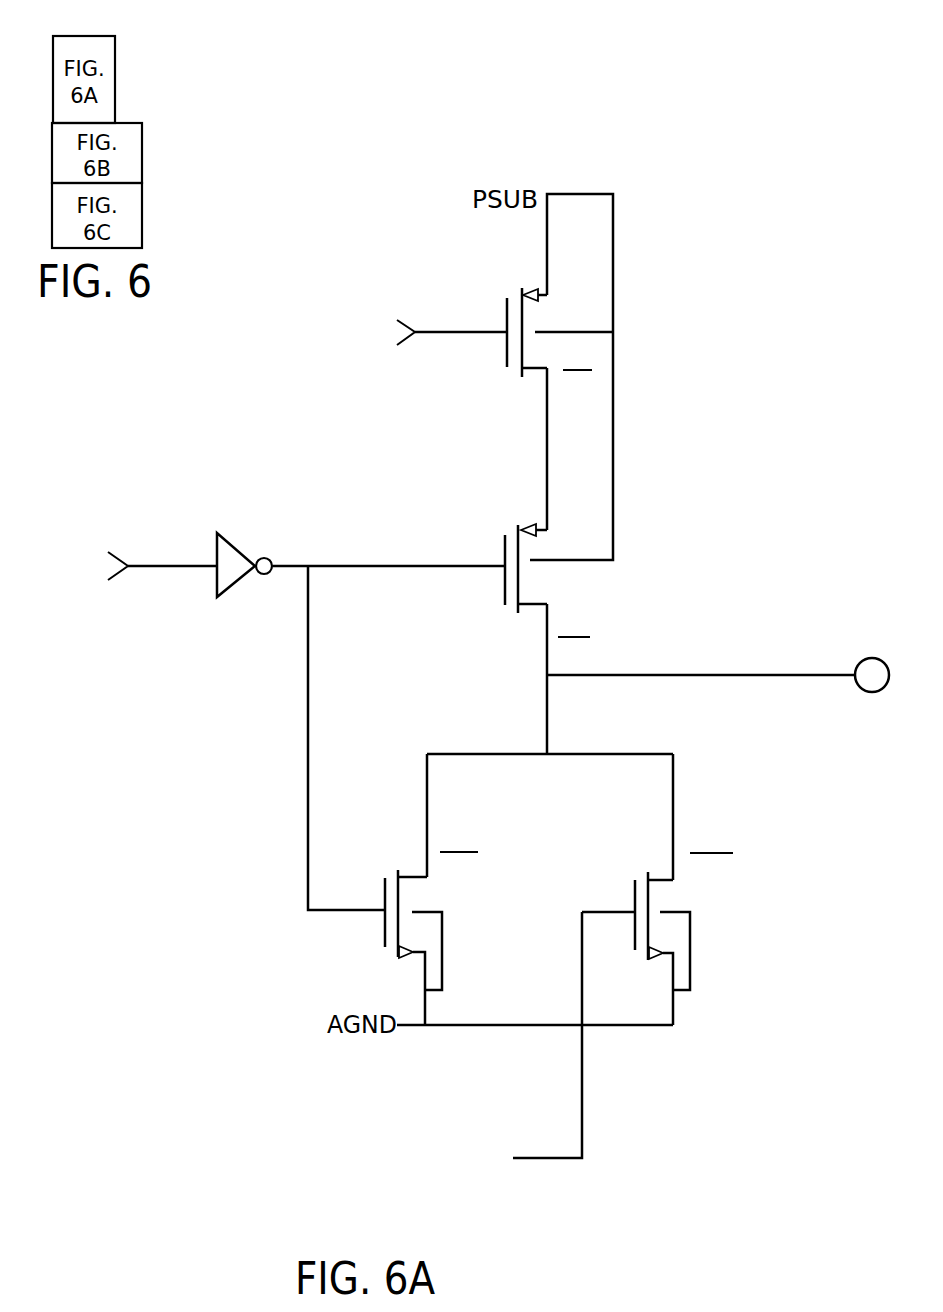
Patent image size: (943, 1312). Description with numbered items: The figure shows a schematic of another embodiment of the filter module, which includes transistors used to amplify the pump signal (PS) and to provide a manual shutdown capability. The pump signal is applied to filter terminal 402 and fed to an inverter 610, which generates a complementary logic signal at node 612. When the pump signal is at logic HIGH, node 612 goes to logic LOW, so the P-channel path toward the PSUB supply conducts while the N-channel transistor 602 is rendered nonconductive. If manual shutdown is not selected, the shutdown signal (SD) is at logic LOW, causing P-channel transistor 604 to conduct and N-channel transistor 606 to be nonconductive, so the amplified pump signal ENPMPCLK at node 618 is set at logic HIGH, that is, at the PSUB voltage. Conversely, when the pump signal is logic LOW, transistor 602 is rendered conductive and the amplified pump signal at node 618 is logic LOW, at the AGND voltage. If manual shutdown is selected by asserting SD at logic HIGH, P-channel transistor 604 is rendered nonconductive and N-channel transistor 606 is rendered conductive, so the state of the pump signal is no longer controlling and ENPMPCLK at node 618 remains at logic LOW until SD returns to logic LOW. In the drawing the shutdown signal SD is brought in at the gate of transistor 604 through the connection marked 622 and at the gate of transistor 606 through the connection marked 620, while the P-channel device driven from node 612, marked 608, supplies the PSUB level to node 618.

The filter terminal 402 is at (121, 559).
The N-channel transistor 602 is at (383, 922).
The P-channel transistor 604 is at (487, 325).
The N-channel transistor 606 is at (632, 933).
The PMOS transistor I9 608 is at (503, 553).
The inverter 610 is at (227, 597).
The node 612 is at (285, 560).
The node 618 is at (682, 680).
The shutdown input SD (lower) 620 is at (540, 1162).
The shutdown input SD (upper) 622 is at (397, 320).